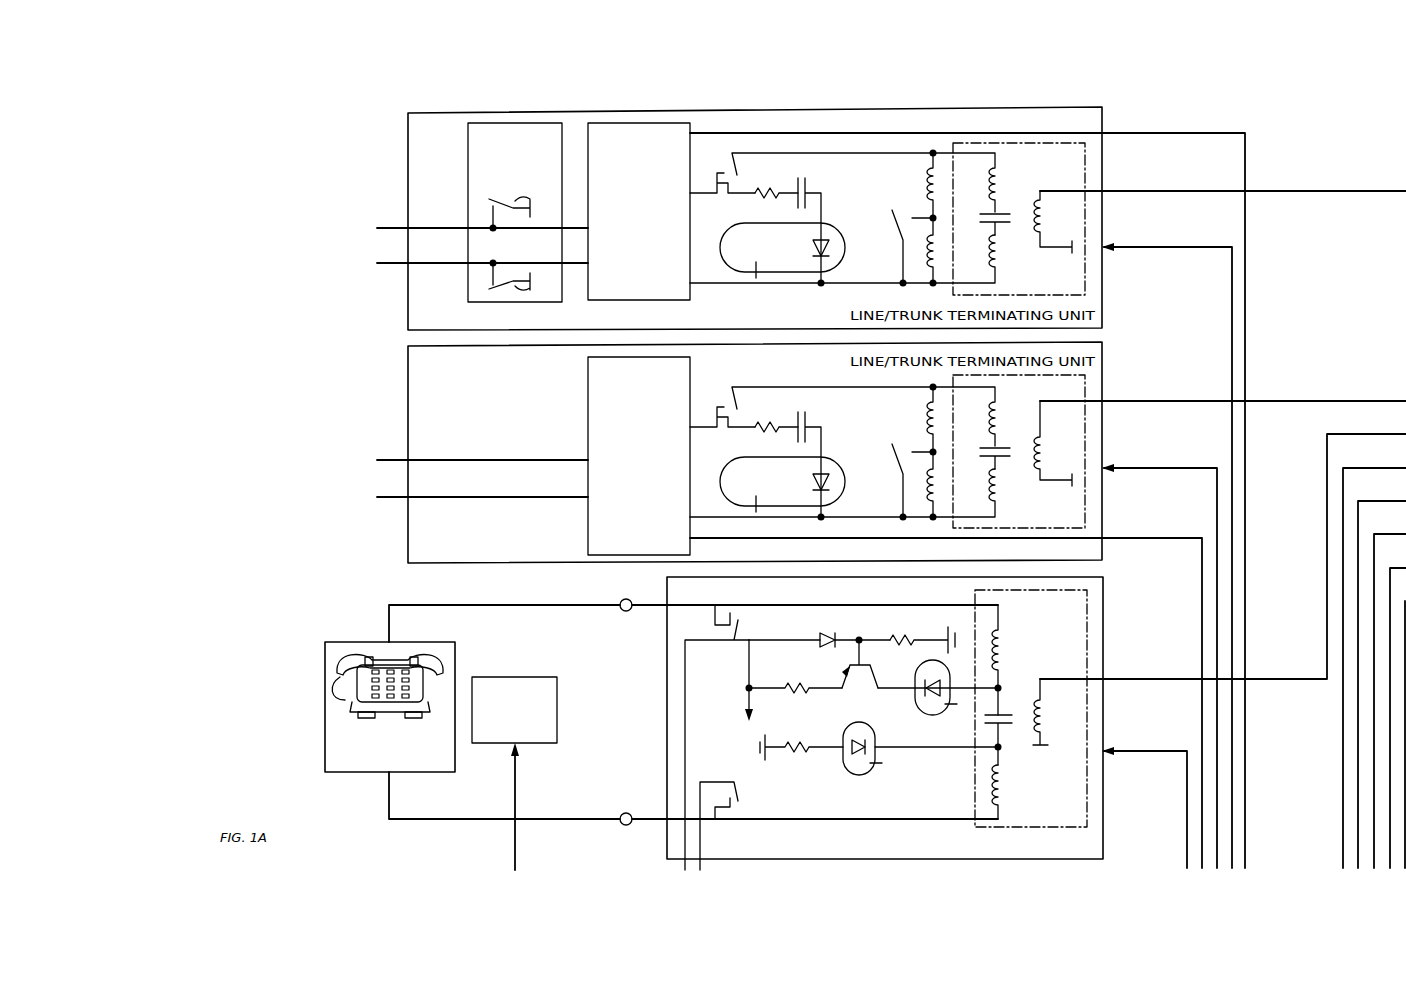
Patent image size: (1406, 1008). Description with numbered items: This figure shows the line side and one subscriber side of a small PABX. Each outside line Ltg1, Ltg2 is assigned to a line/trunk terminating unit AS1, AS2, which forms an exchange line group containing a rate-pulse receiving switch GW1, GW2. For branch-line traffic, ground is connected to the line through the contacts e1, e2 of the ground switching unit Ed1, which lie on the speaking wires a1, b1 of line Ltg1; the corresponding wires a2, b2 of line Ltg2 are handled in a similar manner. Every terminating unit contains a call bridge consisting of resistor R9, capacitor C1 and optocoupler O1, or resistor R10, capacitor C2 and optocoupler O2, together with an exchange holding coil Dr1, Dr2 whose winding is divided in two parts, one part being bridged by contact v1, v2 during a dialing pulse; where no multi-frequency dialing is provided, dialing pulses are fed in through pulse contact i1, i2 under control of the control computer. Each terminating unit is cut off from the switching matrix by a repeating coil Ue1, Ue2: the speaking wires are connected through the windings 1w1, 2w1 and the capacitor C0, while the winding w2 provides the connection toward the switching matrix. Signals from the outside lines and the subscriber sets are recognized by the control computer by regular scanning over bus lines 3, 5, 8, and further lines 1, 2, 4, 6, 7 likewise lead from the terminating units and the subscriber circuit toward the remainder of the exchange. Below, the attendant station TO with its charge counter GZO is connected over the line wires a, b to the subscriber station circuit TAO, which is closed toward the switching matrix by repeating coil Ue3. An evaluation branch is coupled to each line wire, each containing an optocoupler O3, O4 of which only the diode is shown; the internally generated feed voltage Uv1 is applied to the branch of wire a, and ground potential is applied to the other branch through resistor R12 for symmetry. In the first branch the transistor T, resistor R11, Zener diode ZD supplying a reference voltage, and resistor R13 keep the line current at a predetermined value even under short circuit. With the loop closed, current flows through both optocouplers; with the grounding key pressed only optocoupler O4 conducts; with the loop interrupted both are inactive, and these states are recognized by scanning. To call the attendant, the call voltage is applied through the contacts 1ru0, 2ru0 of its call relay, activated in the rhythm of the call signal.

The line/trunk terminating unit AS1 is at (408, 147).
The line/trunk terminating unit AS2 is at (408, 389).
The ground switching unit Ed1 is at (468, 140).
The contact e1 is at (521, 212).
The contact e2 is at (523, 280).
The speaking wire a1 is at (393, 227).
The speaking wire b1 is at (393, 266).
The outside line Ltg1 is at (374, 247).
The a-wire of second line a2 is at (393, 460).
The b-wire of second line b2 is at (393, 500).
The outside line Ltg2 is at (374, 481).
The rate-pulse receiving switch GW1 is at (690, 300).
The rate-pulse receiving switch GW2 is at (690, 360).
The pulse contact i1 is at (811, 171).
The pulse contact i2 is at (811, 404).
The resistor R9 is at (776, 184).
The resistor R10 is at (775, 417).
The capacitor C1 is at (806, 190).
The capacitor C2 is at (806, 424).
The optocoupler O1 is at (730, 224).
The optocoupler O2 is at (730, 458).
The contact v1 is at (902, 246).
The contact v2 is at (902, 480).
The exchange holding coil Dr1 is at (910, 218).
The exchange holding coil Dr2 is at (910, 452).
The repeating coil Ue1 is at (1019, 219).
The repeating coil Ue2 is at (1019, 451).
The repeating coil Ue3 is at (1031, 708).
The winding 1w1 is at (987, 434).
The winding 2w1 is at (987, 527).
The winding w2 is at (1054, 468).
The capacitor C0 is at (985, 489).
The connection line 1 is at (967, 492).
The connection line 2 is at (1223, 181).
The bus line 3 is at (1167, 547).
The connection line 4 is at (1223, 391).
The bus line 5 is at (1159, 655).
The connection line 6 is at (946, 694).
The connection line 7 is at (1223, 556).
The bus line 8 is at (1144, 799).
The attendant station TO is at (455, 650).
The charge counter GZO is at (490, 677).
The subscriber station circuit TAO is at (667, 675).
The line wire a is at (693, 620).
The line wire b is at (693, 809).
The call relay contact 1ru0 is at (731, 737).
The call relay contact 2ru0 is at (739, 826).
The feed voltage Uv1 is at (728, 680).
The Zener diode ZD is at (819, 630).
The resistor R11 is at (795, 678).
The resistor R12 is at (801, 741).
The resistor R13 is at (922, 633).
The transistor T is at (860, 670).
The optocoupler O3 is at (918, 714).
The optocoupler O4 is at (845, 775).